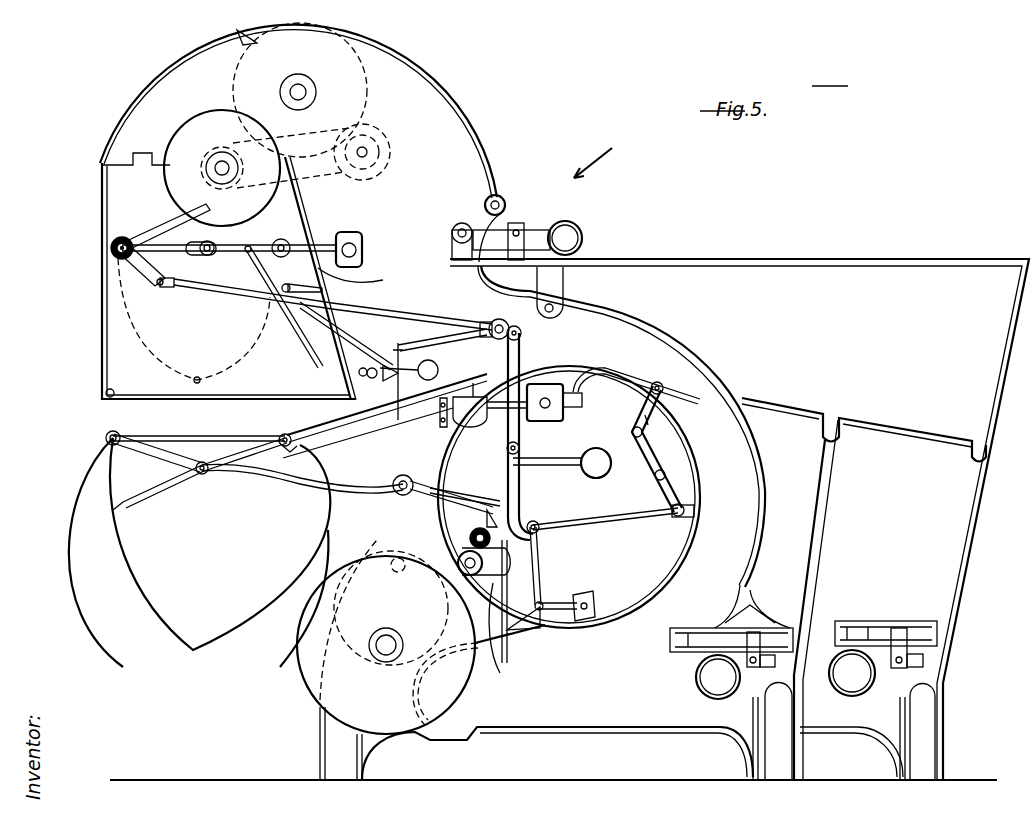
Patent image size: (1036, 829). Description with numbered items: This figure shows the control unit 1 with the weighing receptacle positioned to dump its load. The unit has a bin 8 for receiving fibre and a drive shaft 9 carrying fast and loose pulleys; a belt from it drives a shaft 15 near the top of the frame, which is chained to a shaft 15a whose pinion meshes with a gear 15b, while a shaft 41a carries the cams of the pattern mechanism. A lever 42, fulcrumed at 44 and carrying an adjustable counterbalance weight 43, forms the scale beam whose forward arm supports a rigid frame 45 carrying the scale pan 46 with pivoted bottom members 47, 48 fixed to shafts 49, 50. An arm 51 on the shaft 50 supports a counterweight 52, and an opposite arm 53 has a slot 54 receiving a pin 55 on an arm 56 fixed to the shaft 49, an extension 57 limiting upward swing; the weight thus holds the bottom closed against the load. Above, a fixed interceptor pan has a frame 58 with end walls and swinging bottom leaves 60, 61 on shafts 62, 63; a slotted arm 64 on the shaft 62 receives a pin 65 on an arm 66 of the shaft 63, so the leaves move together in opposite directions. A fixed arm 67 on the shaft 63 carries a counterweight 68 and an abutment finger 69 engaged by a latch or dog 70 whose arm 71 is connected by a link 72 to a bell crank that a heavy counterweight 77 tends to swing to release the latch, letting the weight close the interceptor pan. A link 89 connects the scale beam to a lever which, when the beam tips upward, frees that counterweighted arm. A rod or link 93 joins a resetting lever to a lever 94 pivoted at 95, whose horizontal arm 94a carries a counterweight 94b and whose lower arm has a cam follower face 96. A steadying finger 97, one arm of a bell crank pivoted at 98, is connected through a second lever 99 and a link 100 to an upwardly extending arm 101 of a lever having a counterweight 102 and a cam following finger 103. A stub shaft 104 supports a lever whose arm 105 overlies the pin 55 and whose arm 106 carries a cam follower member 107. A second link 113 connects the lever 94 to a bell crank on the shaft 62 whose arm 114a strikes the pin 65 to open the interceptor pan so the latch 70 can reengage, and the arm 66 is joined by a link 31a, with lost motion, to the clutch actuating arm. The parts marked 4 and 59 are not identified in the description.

The control unit 1 is at (604, 151).
The bin 8 is at (928, 284).
The drive shaft 9 is at (380, 657).
The shaft 15 is at (216, 165).
The shaft 15a is at (364, 150).
The gear 15b is at (300, 90).
The pin 4 is at (152, 281).
The link 31a is at (336, 352).
The shaft 41a is at (466, 561).
The scale beam lever 42 is at (420, 423).
The counterbalance weight 43 is at (573, 417).
The fulcrum 44 is at (330, 446).
The rigid frame 45 is at (198, 436).
The scale pan 46 is at (190, 620).
The bottom member 47 is at (75, 548).
The bottom member 48 is at (327, 560).
The shaft 49 is at (106, 437).
The shaft 50 is at (285, 434).
The arm 51 is at (445, 396).
The counterweight 52 is at (478, 425).
The arm 53 is at (267, 498).
The elongate slot 54 is at (212, 473).
The pin 55 is at (202, 476).
The arm 56 is at (157, 458).
The extension 57 is at (157, 488).
The interceptor pan frame 58 is at (100, 350).
The panel 59 is at (122, 321).
The swinging bottom member 60 is at (125, 286).
The swinging bottom member 61 is at (233, 343).
The shaft 62 is at (114, 250).
The shaft 63 is at (286, 245).
The arm 64 is at (117, 246).
The pin 65 is at (220, 256).
The arm 66 is at (235, 247).
The fixed arm 67 is at (323, 243).
The counterweight 68 is at (364, 234).
The abutment finger 69 is at (350, 278).
The latch or dog 70 is at (324, 291).
The arm 71 is at (253, 262).
The link 72 is at (360, 353).
The counterweight 77 is at (445, 360).
The link 89 is at (396, 390).
The rod or link 93 is at (447, 340).
The lever 94 is at (520, 352).
The horizontal arm 94a is at (550, 467).
The counterweight 94b is at (599, 458).
The pivot 95 is at (521, 448).
The cam follower face 96 is at (540, 530).
The steadying finger 97 is at (592, 370).
The pivot 98 is at (662, 386).
The second lever 99 is at (652, 462).
The link 100 is at (630, 520).
The upwardly extending arm 101 is at (545, 566).
The counterweight 102 is at (594, 605).
The cam following finger 103 is at (515, 617).
The stub shaft 104 is at (410, 480).
The arm 105 is at (310, 487).
The arm 106 is at (462, 496).
The cam follower member 107 is at (480, 512).
The second link 113 is at (402, 313).
The arm 114a is at (160, 228).